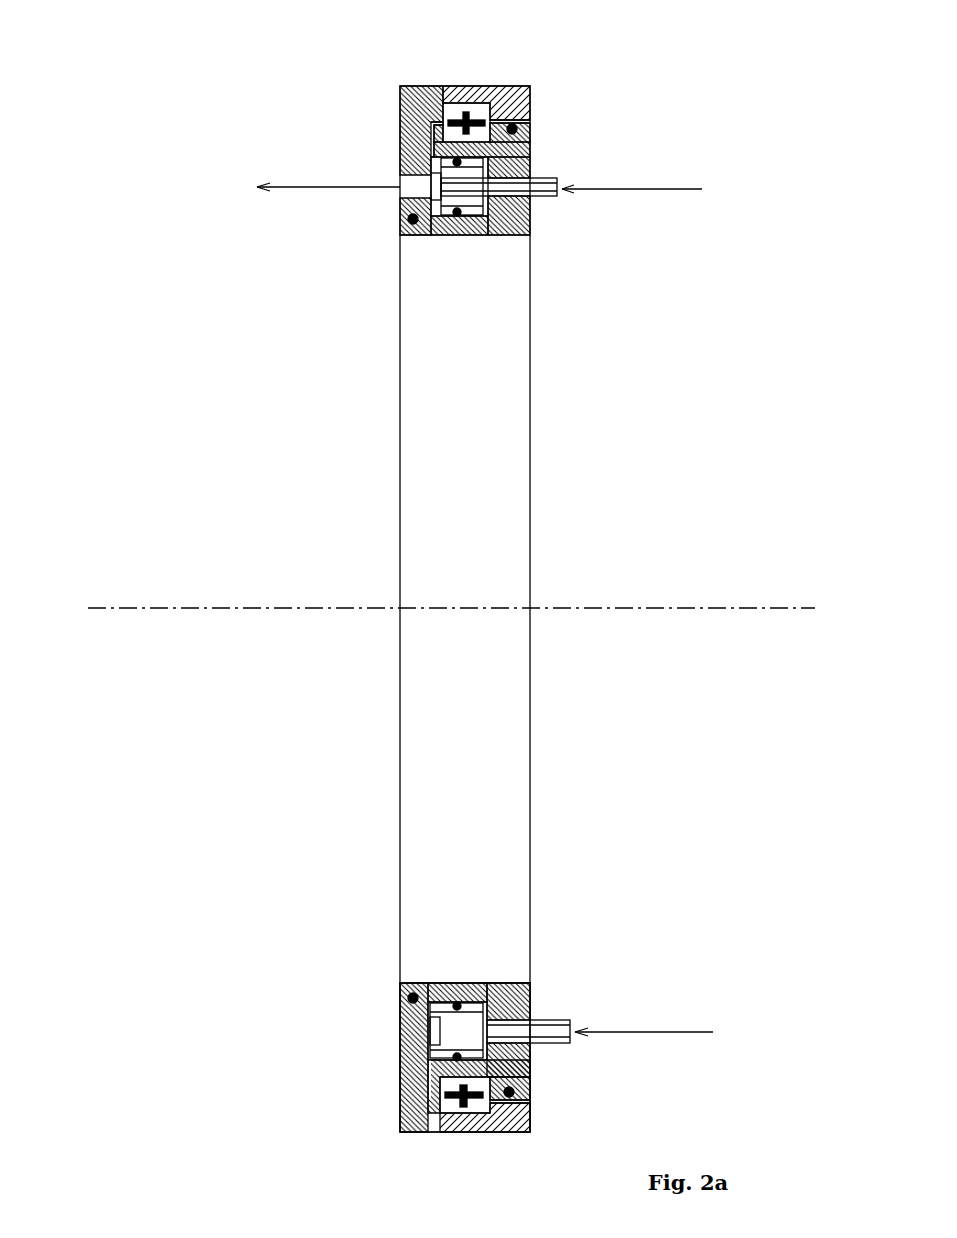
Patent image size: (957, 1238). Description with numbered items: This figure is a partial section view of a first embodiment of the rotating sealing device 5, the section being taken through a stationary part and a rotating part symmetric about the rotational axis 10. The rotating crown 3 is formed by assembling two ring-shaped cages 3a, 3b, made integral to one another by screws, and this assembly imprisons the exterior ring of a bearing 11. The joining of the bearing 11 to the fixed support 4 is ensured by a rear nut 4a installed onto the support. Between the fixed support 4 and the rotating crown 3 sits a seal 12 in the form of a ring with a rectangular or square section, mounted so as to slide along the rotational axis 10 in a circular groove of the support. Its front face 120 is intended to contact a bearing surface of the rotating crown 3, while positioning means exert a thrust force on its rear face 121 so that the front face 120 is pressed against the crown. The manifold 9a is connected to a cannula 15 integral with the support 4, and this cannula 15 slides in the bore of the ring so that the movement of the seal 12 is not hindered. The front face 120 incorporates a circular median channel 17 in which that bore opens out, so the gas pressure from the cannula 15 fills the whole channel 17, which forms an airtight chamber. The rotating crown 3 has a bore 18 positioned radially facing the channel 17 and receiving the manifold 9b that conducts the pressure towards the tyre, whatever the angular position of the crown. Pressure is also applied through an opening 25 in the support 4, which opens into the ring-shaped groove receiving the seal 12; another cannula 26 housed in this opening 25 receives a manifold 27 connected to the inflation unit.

The rotating crown 3 is at (327, 87).
The ring-shaped cage 3a is at (400, 127).
The ring-shaped cage 3b is at (530, 87).
The fixed support 4 is at (525, 218).
The rear nut 4a is at (530, 136).
The rotating sealing device 5 is at (558, 933).
The manifold 9a is at (680, 189).
The manifold 9b is at (298, 187).
The rotational axis 10 is at (173, 608).
The bearing 11 is at (455, 112).
The seal 12 is at (482, 215).
The cannula 15 is at (545, 179).
The circular median channel 17 is at (430, 1055).
The bore 18 is at (410, 192).
The opening 25 is at (492, 1025).
The cannula 26 is at (555, 1020).
The manifold 27 is at (660, 1032).
The front face 120 is at (400, 160).
The rear face 121 is at (508, 237).